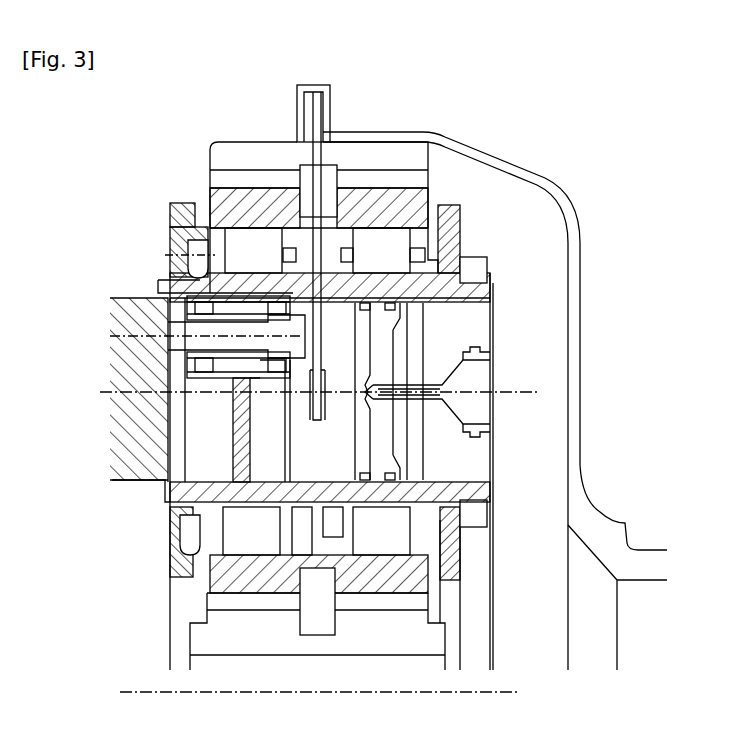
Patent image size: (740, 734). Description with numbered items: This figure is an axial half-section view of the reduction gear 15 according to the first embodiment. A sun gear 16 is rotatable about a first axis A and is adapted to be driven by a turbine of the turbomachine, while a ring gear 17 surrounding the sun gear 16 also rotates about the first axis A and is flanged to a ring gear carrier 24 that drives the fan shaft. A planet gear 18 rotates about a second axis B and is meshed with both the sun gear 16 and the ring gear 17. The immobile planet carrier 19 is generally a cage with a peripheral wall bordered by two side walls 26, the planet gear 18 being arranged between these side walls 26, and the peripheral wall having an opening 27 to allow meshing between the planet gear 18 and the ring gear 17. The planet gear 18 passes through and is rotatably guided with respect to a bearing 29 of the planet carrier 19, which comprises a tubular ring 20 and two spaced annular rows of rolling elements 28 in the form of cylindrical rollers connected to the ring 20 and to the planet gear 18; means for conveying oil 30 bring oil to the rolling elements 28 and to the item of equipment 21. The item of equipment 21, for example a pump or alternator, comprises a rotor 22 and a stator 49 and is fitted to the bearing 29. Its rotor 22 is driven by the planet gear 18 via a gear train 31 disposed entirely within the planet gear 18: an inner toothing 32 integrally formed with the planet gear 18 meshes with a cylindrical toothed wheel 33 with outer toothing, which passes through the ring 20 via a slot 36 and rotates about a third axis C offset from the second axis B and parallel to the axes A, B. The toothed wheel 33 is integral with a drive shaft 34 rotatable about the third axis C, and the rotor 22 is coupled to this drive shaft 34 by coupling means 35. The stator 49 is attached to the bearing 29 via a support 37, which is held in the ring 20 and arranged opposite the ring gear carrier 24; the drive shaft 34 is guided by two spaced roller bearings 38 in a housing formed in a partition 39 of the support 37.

The reduction gear 15 is at (607, 203).
The sun gear 16 is at (222, 634).
The ring gear 17 is at (270, 157).
The planet gear 18 is at (247, 197).
The planet carrier 19 is at (500, 227).
The tubular ring 20 is at (250, 292).
The item of equipment 21 is at (128, 437).
The rotor 22 is at (208, 255).
The ring gear carrier 24 is at (483, 157).
The side walls 26 is at (470, 226).
The opening 27 is at (433, 217).
The rolling elements 28 is at (375, 243).
The bearing 29 is at (397, 233).
The means for conveying oil 30 is at (470, 475).
The gear train 31 is at (345, 325).
The inner toothing 32 is at (318, 240).
The toothed wheel 33 is at (385, 433).
The drive shaft 34 is at (470, 385).
The coupling means 35 is at (236, 378).
The slot 36 is at (430, 306).
The support 37 is at (165, 480).
The roller bearings 38 is at (228, 380).
The partition 39 is at (232, 405).
The stator 49 is at (143, 317).
The first axis A is at (130, 692).
The second axis B is at (107, 392).
The third axis C is at (165, 340).